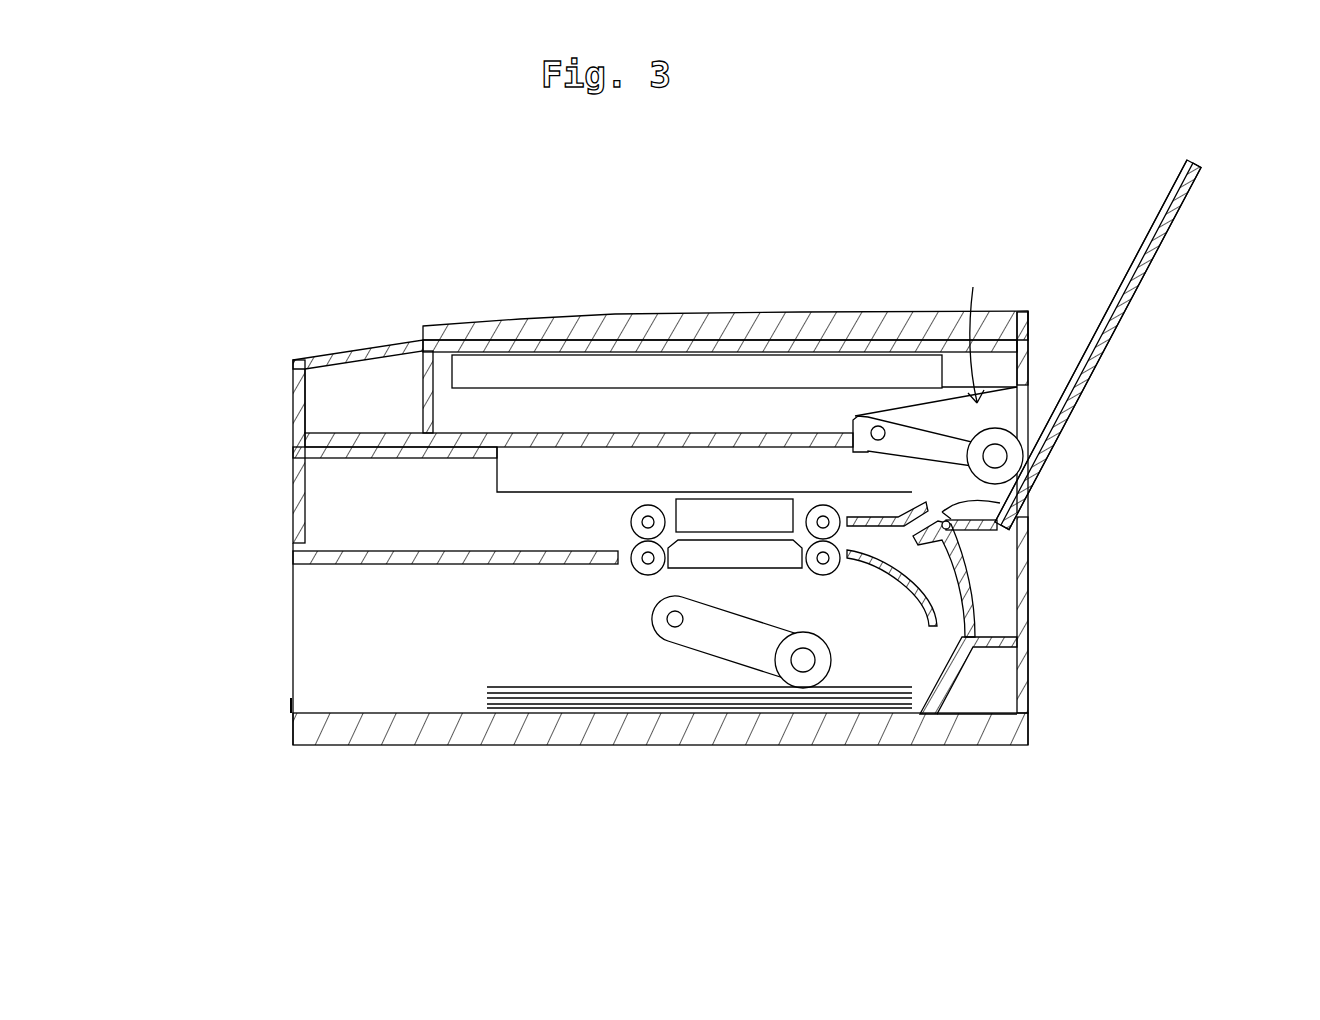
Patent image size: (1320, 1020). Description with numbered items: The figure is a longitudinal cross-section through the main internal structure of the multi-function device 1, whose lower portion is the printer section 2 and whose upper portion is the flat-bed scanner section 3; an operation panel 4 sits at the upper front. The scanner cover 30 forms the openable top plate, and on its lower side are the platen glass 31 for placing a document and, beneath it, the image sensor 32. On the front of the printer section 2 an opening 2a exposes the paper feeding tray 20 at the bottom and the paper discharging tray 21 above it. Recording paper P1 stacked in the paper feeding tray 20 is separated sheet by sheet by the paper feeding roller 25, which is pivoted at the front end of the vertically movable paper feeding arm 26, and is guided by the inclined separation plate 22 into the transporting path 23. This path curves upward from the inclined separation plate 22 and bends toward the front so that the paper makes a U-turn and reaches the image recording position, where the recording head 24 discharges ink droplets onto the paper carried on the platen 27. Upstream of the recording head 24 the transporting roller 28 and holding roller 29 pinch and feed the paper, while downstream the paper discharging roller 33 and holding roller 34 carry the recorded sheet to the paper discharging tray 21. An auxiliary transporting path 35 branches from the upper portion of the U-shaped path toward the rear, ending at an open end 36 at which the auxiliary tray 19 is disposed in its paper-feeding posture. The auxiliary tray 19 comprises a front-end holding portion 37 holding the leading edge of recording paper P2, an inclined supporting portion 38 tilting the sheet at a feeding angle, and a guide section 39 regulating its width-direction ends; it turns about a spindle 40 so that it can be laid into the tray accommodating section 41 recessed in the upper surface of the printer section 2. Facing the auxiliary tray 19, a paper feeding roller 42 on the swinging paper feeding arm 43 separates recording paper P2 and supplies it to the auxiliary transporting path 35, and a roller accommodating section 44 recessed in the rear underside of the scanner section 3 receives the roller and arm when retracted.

The multi-function device 1 is at (270, 806).
The printer section 2 is at (222, 566).
The opening 2a is at (264, 680).
The scanner section 3 is at (473, 280).
The operation panel 4 is at (345, 348).
The auxiliary tray 19 is at (1205, 217).
The paper feeding tray 20 is at (396, 713).
The paper discharging tray 21 is at (414, 551).
The inclined separation plate 22 is at (950, 682).
The transporting path 23 is at (966, 617).
The recording head 24 is at (706, 499).
The paper feeding roller 25 is at (831, 660).
The paper feeding arm 26 is at (718, 657).
The platen 27 is at (716, 568).
The transporting roller 28 is at (838, 575).
The holding roller 29 is at (823, 504).
The scanner cover 30 is at (760, 312).
The platen glass 31 is at (583, 338).
The image sensor 32 is at (600, 389).
The paper discharging roller 33 is at (648, 575).
The holding roller 34 is at (647, 504).
The auxiliary transporting path 35 is at (907, 519).
The open end 36 is at (1000, 503).
The front-end holding portion 37 is at (988, 528).
The inclined supporting portion 38 is at (1130, 308).
The guide section 39 is at (1127, 258).
The spindle 40 is at (947, 530).
The tray accommodating section 41 is at (675, 468).
The paper feeding roller 42 is at (1010, 465).
The paper feeding arm 43 is at (862, 418).
The roller accommodating section 44 is at (936, 335).
The recording paper P1 is at (514, 687).
The recording paper P2 is at (1070, 368).